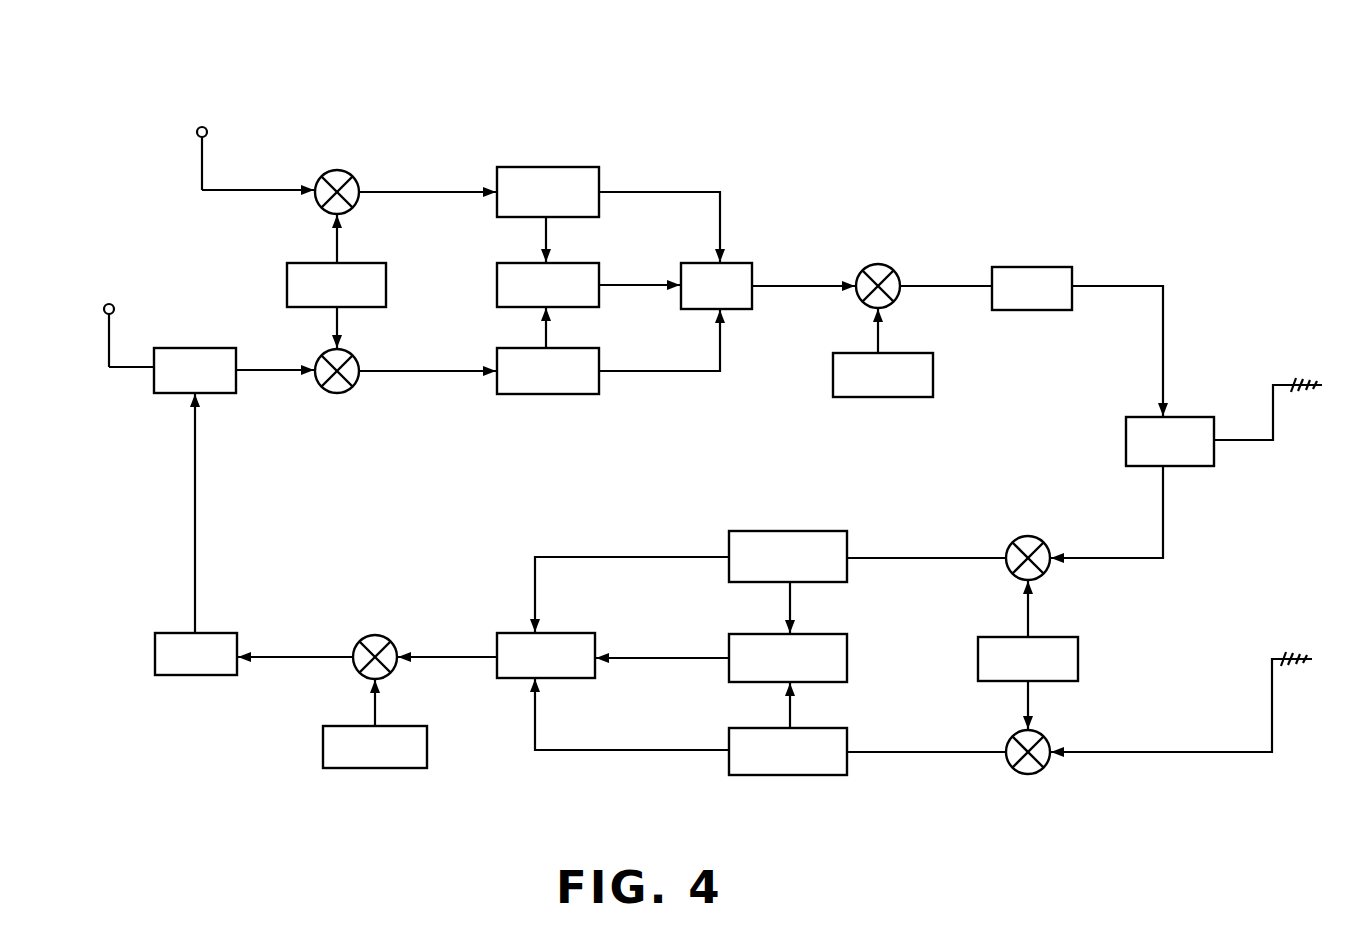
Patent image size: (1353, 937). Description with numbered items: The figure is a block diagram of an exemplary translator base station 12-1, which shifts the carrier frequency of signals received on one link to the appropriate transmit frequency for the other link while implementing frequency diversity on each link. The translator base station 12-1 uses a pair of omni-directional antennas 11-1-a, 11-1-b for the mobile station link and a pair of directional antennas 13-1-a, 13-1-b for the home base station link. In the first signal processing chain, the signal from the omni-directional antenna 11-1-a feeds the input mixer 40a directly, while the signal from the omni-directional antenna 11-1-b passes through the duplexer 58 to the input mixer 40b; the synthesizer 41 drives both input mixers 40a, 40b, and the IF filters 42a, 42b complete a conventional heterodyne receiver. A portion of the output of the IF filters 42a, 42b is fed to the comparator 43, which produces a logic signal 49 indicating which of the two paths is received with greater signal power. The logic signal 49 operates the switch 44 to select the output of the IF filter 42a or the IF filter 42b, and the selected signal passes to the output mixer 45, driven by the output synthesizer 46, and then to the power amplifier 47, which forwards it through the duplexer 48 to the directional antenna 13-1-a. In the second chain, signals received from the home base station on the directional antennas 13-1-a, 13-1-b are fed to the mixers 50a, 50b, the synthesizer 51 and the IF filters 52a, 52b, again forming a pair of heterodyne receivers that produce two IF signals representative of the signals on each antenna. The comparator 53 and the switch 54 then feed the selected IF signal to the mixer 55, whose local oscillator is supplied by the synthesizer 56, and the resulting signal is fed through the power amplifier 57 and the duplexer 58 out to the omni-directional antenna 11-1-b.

The omni-directional antenna 11-1-a is at (200, 116).
The omni-directional antenna 11-1-b is at (105, 293).
The translator base station 12-1 is at (788, 96).
The directional antenna 13-1-a is at (1309, 354).
The directional antenna 13-1-b is at (1295, 631).
The input mixer 40a is at (352, 176).
The input mixer 40b is at (352, 387).
The synthesizer 41 is at (372, 263).
The intermediate frequency filter 42a is at (578, 167).
The intermediate frequency filter 42b is at (578, 394).
The comparator 43 is at (583, 263).
The switch 44 is at (742, 263).
The output mixer 45 is at (893, 270).
The output synthesizer 46 is at (925, 353).
The power amplifier 47 is at (1032, 267).
The duplexer 48 is at (1193, 417).
The logic signal 49 is at (636, 283).
The mixer 50a is at (1044, 543).
The mixer 50b is at (1033, 774).
The synthesizer 51 is at (1058, 637).
The intermediate frequency filter 52a is at (800, 531).
The intermediate frequency filter 52b is at (785, 775).
The comparator 53 is at (830, 634).
The switch 54 is at (578, 633).
The mixer 55 is at (390, 642).
The synthesizer 56 is at (390, 768).
The power amplifier 57 is at (218, 633).
The duplexer 58 is at (190, 348).